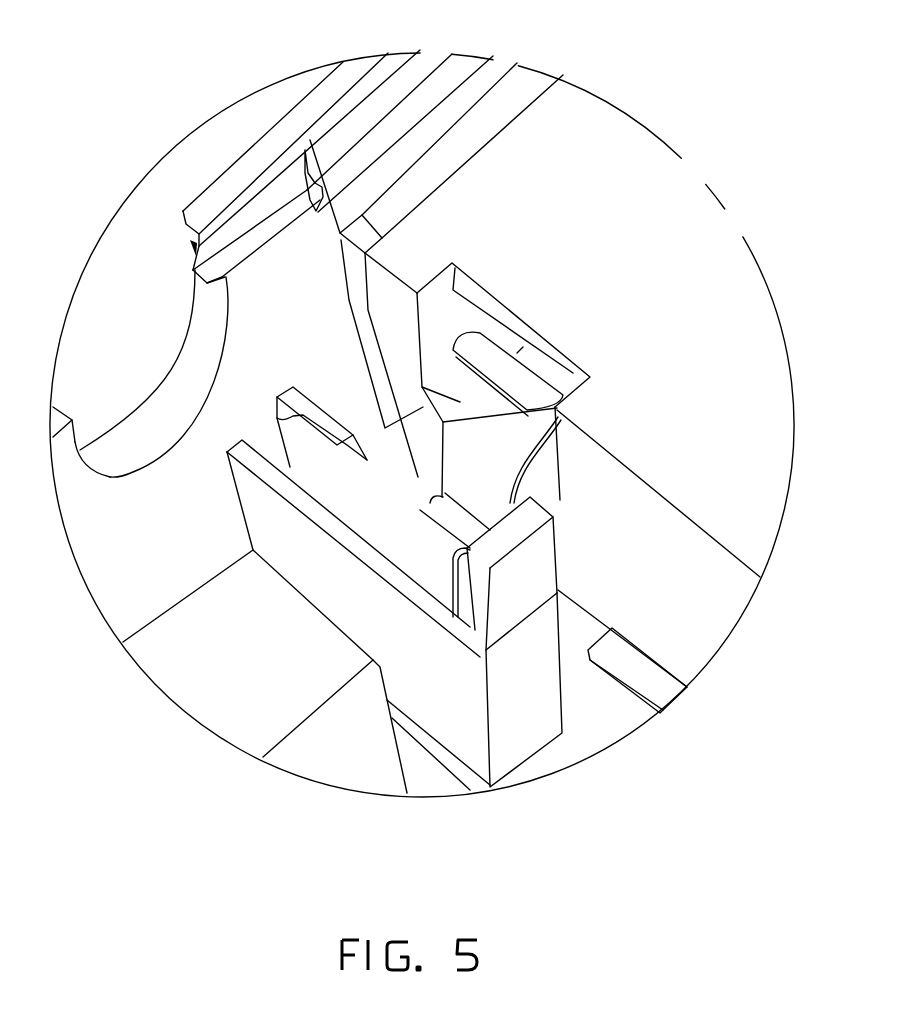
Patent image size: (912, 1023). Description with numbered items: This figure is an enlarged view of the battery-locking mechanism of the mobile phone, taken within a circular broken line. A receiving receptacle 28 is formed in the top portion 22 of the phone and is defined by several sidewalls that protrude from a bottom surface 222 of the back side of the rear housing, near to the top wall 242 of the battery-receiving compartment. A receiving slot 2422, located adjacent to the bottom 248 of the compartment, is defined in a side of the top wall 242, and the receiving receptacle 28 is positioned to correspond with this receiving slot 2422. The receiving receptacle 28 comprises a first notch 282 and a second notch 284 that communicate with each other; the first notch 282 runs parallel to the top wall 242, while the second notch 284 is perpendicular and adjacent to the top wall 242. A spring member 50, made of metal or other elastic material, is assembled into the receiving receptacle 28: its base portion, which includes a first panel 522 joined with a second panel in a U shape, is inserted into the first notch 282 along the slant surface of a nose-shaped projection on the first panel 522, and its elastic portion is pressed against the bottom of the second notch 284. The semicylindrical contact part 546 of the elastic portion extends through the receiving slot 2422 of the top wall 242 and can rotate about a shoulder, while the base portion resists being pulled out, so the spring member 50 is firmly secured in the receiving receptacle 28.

The top portion 22 is at (103, 537).
The bottom surface 222 is at (629, 695).
The top wall 242 is at (620, 497).
The receiving slot 2422 is at (563, 383).
The bottom 248 is at (627, 261).
The receiving receptacle 28 is at (273, 397).
The first notch 282 is at (483, 603).
The second notch 284 is at (237, 103).
The spring member 50 is at (517, 428).
The first panel 522 is at (435, 570).
The contact part 546 is at (490, 363).